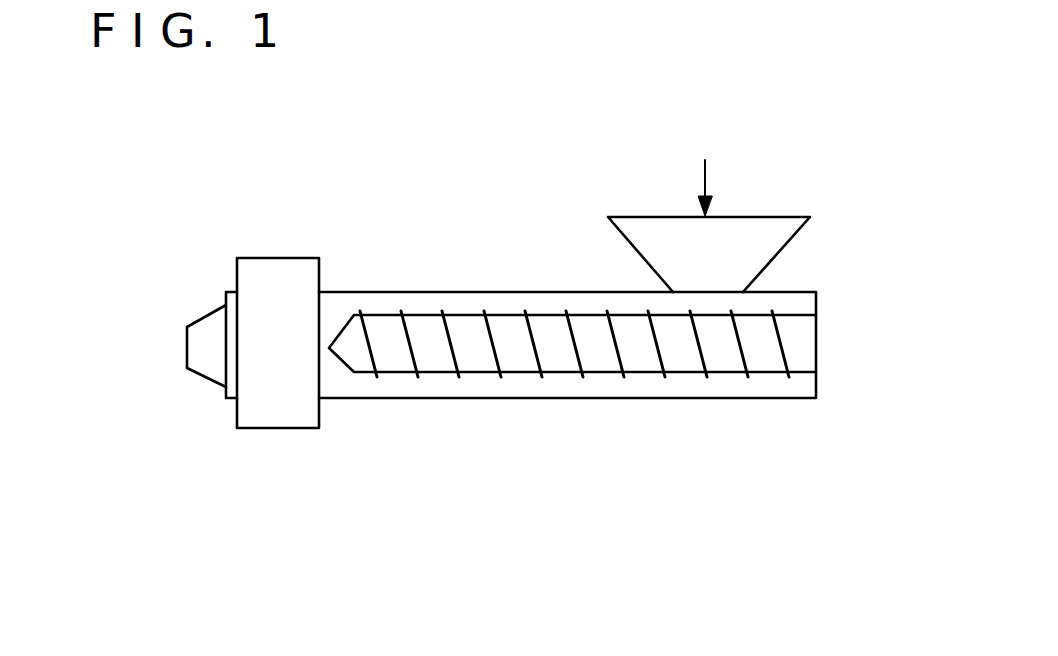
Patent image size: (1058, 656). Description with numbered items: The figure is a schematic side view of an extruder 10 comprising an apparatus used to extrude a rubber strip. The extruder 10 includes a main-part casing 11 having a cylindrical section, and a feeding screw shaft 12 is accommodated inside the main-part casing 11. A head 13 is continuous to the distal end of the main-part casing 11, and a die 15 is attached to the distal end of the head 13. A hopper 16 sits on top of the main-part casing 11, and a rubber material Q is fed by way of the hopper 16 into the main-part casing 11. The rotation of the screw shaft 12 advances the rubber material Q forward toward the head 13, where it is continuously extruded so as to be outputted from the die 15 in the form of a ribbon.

The extruder 10 is at (513, 283).
The main-part casing 11 is at (425, 393).
The feeding screw shaft 12 is at (760, 340).
The head 13 is at (275, 273).
The die 15 is at (208, 330).
The hopper 16 is at (752, 233).
The rubber material Q is at (703, 166).